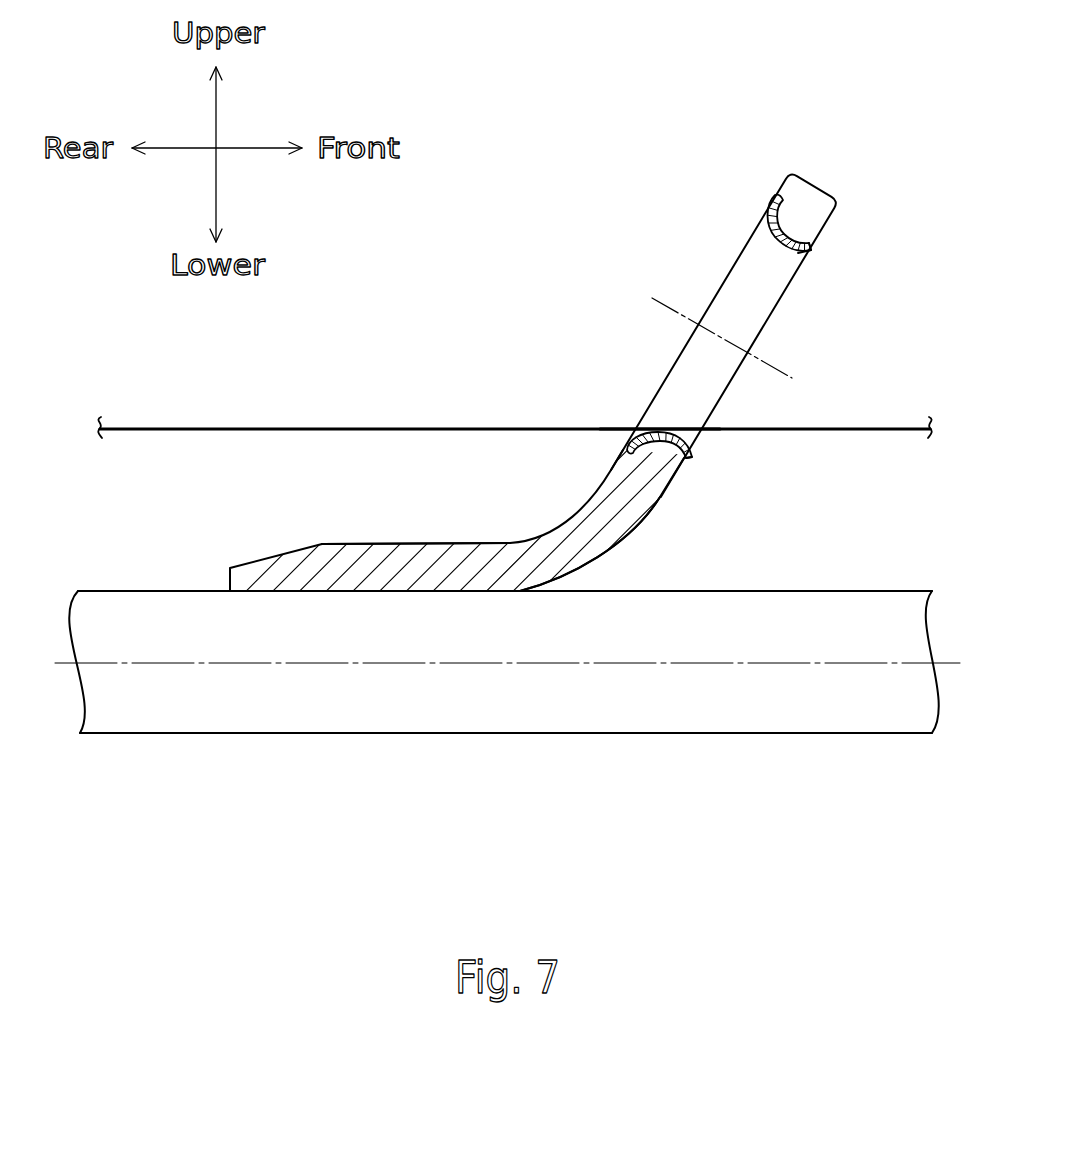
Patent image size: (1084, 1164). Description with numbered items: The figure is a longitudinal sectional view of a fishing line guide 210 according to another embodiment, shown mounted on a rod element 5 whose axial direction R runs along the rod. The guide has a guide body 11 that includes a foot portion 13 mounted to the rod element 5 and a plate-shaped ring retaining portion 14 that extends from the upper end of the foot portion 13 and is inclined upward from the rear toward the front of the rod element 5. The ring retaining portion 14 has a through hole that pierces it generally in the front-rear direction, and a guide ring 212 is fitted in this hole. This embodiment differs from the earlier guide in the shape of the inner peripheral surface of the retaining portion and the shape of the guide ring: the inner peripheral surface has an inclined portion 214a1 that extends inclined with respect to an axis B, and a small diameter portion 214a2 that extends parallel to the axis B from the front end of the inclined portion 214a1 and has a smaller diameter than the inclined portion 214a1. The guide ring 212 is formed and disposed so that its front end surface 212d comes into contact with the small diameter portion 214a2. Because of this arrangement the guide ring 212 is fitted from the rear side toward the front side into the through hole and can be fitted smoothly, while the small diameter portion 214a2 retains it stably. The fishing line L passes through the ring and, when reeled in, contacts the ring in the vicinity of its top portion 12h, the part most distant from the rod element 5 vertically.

The rod element 5 is at (507, 679).
The guide body 11 is at (500, 510).
The foot portion 13 is at (402, 548).
The ring retaining portion 14 is at (640, 517).
The top portion 12h is at (652, 415).
The fishing line guide 210 is at (705, 319).
The guide ring 212 is at (777, 258).
The front end surface 212d is at (805, 249).
The inclined portion 214a1 is at (769, 222).
The small diameter portion 214a2 is at (797, 252).
The fishing line L is at (227, 428).
The axial direction R is at (810, 660).
The axis B is at (667, 302).